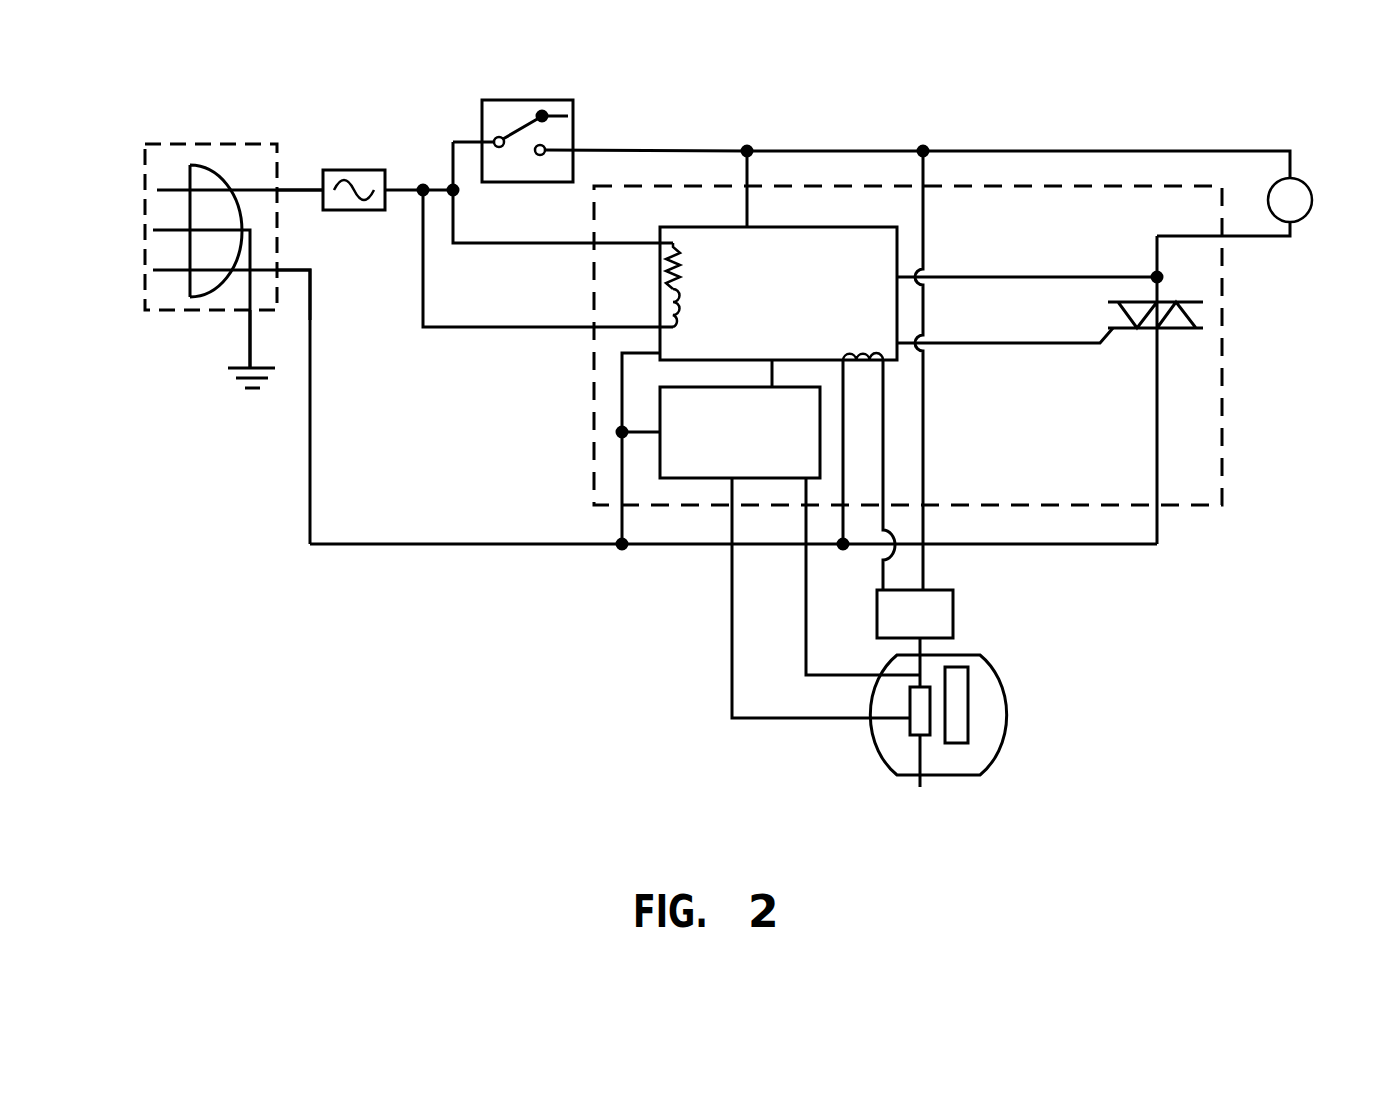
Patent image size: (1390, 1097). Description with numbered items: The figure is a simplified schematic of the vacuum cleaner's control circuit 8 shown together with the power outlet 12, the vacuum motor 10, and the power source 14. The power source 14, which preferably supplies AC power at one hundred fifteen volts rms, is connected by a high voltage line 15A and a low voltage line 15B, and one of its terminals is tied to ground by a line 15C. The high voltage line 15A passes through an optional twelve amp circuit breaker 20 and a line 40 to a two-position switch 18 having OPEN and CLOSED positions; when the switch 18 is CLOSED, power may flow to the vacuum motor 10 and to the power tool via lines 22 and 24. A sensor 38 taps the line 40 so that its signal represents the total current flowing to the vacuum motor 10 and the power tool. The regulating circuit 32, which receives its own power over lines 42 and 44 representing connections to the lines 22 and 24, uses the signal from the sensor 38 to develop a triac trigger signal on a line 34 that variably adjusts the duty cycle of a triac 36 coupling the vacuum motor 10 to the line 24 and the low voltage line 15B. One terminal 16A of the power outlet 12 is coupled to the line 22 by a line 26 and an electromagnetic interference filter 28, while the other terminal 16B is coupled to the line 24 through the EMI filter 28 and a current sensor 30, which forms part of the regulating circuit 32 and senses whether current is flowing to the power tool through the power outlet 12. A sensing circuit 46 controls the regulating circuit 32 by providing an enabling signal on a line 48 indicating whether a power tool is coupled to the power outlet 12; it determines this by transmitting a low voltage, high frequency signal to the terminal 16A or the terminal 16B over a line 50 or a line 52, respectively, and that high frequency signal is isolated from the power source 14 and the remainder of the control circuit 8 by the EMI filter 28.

The control circuit 8 is at (1226, 453).
The vacuum motor 10 is at (1313, 204).
The power outlet 12 is at (880, 750).
The power source 14 is at (222, 140).
The high voltage line 15A is at (300, 187).
The low voltage line 15B is at (293, 270).
The ground line 15C is at (248, 334).
The first terminal of power outlet 16A is at (962, 743).
The second terminal of power outlet 16B is at (923, 757).
The two-position switch 18 is at (545, 100).
The circuit breaker 20 is at (352, 170).
The line 22 is at (887, 151).
The line 24 is at (437, 545).
The line 26 is at (925, 390).
The electromagnetic interference (EMI) filter 28 is at (957, 614).
The current sensor 30 is at (862, 350).
The regulating circuit 32 is at (876, 225).
The line 34 is at (1092, 344).
The triac 36 is at (1165, 301).
The sensor 38 is at (686, 290).
The line 40 is at (415, 186).
The line 42 is at (748, 175).
The line 44 is at (622, 414).
The sensing circuit 46 is at (707, 478).
The line 48 is at (772, 374).
The line 50 is at (805, 641).
The line 52 is at (728, 657).